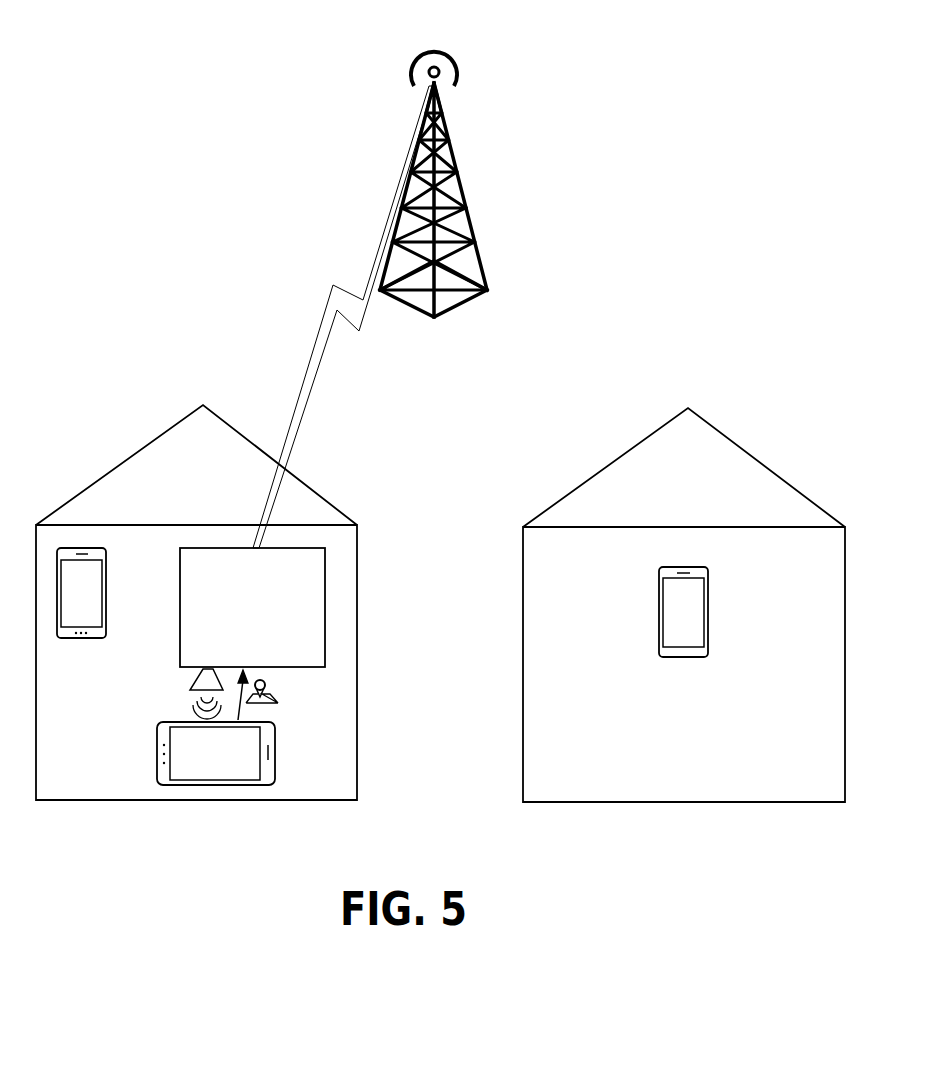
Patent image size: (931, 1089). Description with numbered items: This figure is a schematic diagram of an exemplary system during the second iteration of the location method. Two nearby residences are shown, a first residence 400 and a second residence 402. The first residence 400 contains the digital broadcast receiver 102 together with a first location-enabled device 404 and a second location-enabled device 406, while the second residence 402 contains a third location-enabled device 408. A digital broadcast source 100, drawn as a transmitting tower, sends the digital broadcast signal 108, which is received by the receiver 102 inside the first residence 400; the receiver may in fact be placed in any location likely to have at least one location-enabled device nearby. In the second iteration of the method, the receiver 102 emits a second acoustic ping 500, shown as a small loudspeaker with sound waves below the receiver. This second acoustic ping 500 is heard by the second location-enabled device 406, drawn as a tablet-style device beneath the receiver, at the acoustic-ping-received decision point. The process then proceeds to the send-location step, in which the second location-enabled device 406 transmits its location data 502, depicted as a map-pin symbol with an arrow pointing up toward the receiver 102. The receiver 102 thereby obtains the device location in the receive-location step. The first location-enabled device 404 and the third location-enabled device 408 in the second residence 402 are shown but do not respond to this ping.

The digital broadcast source 100 is at (449, 52).
The digital broadcast signal 108 is at (300, 418).
The first residence 400 is at (318, 494).
The second residence 402 is at (720, 430).
The digital broadcast receiver 102 is at (326, 592).
The first location-enabled device 404 is at (70, 641).
The second location-enabled device 406 is at (280, 736).
The third location-enabled device 408 is at (700, 658).
The second acoustic ping 500 is at (193, 684).
The location data 502 is at (278, 697).